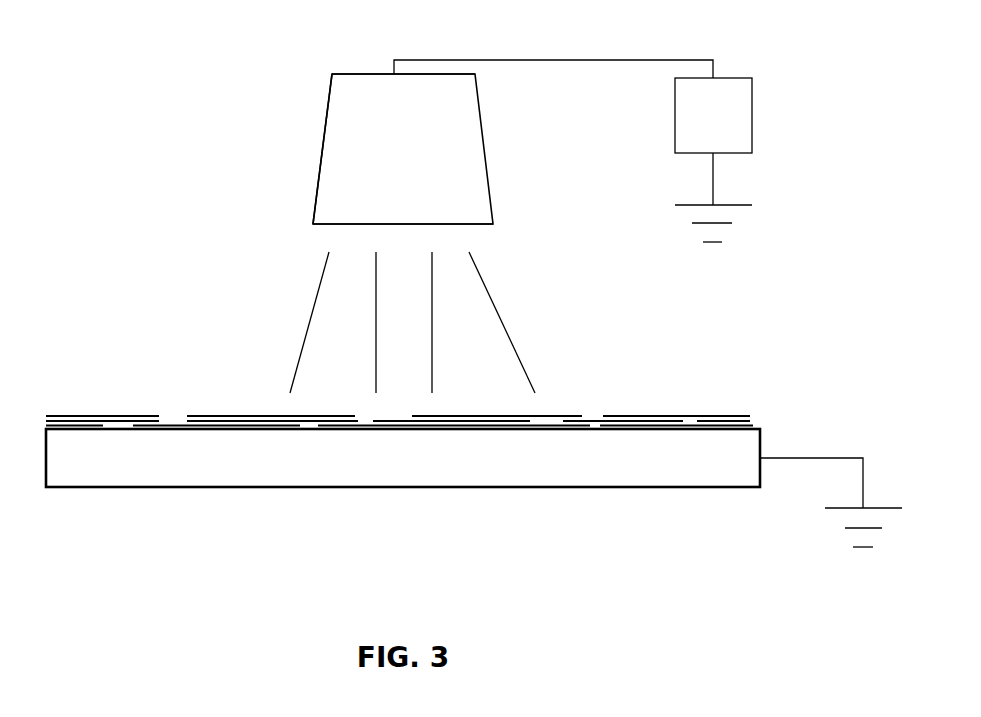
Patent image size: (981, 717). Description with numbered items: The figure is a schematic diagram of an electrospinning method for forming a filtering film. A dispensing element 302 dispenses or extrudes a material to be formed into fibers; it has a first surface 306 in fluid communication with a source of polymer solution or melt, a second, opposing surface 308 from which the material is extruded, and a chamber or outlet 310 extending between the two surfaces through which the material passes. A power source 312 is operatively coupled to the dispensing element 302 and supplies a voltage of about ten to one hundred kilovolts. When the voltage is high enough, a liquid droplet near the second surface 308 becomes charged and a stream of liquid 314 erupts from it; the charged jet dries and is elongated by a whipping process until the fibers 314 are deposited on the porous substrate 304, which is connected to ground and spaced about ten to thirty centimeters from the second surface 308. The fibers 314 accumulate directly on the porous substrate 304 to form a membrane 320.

The dispensing element 302 is at (326, 121).
The porous substrate 304 is at (387, 476).
The first surface 306 is at (350, 73).
The second surface 308 is at (470, 225).
The chamber or outlet 310 is at (384, 161).
The power source 312 is at (692, 128).
The fibers 314 is at (493, 303).
The membrane 320 is at (753, 424).